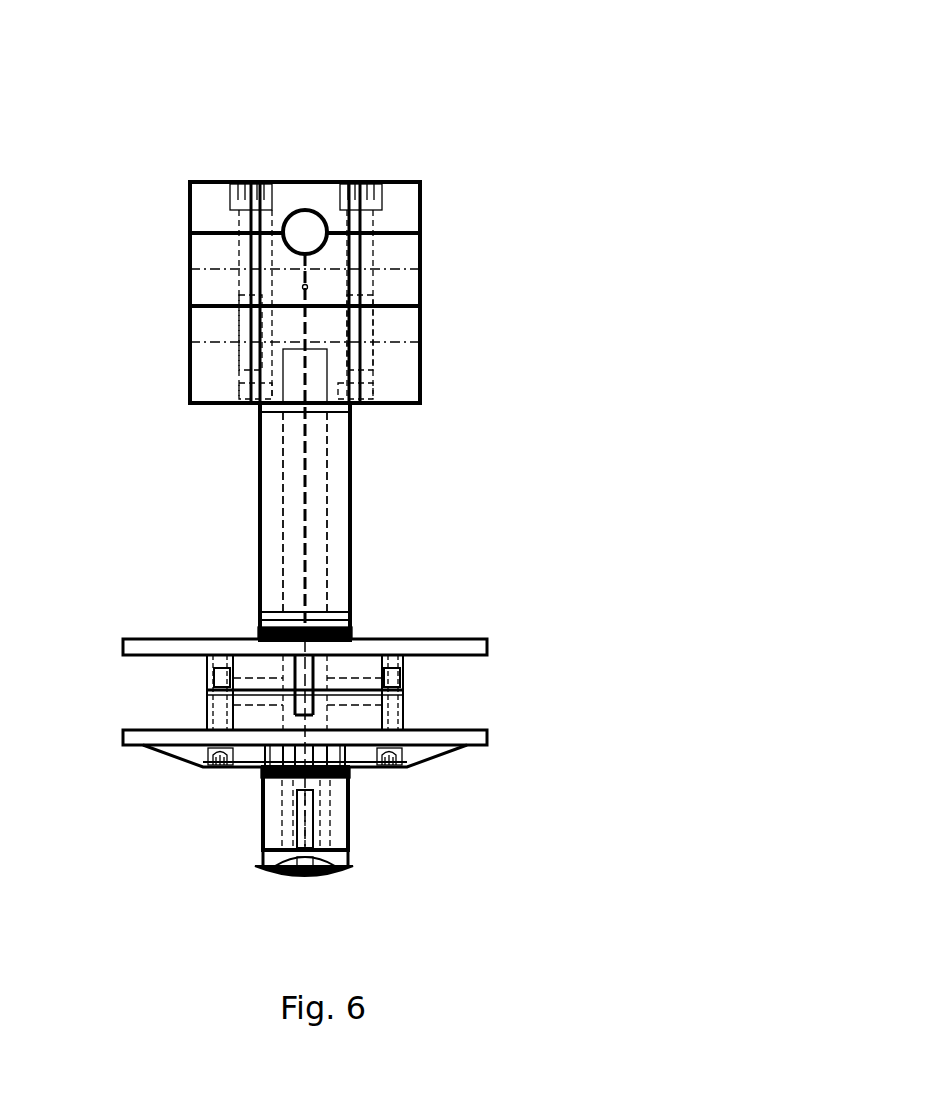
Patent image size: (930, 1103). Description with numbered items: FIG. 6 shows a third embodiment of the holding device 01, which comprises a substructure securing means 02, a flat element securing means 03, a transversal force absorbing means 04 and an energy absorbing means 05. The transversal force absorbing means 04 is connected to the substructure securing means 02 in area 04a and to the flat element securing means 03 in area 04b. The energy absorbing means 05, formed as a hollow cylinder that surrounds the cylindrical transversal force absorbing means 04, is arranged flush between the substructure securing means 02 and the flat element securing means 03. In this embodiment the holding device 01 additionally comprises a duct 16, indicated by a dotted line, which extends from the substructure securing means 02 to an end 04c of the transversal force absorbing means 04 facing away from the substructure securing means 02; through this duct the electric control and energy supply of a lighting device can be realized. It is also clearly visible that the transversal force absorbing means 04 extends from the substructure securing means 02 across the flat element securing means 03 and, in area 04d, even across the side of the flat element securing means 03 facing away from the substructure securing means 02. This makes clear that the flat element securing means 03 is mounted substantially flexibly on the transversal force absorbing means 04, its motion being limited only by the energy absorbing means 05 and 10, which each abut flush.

The holding device 01 is at (498, 90).
The substructure securing means 02 is at (488, 285).
The flat element securing means 03 is at (565, 697).
The transversal force absorbing means 04 is at (328, 460).
The area of connection to substructure securing means 04a is at (293, 384).
The area of connection to flat element securing means 04b is at (328, 665).
The end of transversal force absorbing means 04c is at (262, 853).
The area extending across the far side of the flat element securing means 04d is at (331, 796).
The energy absorbing means 05 is at (341, 545).
The energy absorbing means 10 is at (263, 795).
The duct 16 is at (305, 503).